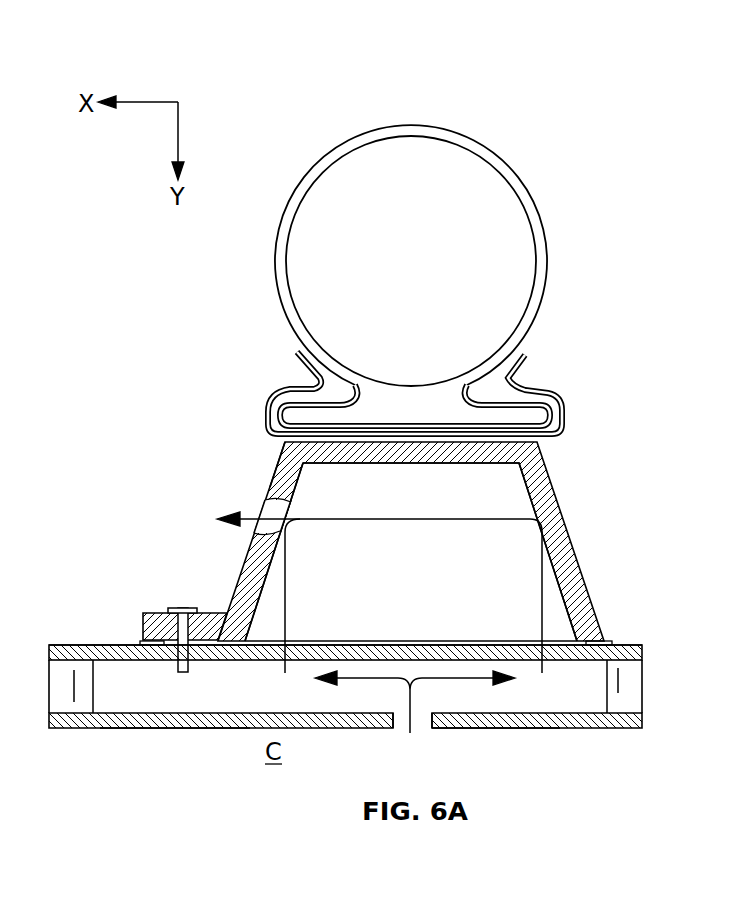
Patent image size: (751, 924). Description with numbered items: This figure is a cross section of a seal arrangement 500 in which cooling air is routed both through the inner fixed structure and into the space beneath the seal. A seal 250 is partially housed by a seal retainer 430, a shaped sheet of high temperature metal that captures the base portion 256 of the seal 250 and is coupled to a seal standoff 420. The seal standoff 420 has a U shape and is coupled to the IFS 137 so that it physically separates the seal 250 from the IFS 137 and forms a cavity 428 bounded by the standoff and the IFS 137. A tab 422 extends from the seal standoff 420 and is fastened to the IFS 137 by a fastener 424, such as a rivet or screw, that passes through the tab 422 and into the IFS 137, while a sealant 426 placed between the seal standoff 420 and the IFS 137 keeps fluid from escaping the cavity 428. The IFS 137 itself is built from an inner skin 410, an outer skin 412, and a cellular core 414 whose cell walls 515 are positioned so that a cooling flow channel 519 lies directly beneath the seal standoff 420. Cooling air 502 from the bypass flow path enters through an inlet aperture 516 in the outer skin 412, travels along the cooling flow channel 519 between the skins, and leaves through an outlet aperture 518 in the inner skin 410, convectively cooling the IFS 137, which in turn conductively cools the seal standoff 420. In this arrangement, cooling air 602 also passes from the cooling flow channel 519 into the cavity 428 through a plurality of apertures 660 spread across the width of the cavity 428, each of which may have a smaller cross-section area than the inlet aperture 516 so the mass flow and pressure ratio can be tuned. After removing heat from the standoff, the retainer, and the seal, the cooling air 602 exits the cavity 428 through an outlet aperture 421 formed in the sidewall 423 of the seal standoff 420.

The seal arrangement 500 is at (525, 120).
The seal 250 is at (373, 135).
The seal retainer 430 is at (543, 393).
The base portion 256 is at (553, 428).
The seal standoff 420 is at (570, 535).
The sidewall 423 is at (278, 480).
The outlet aperture 421 is at (263, 498).
The cavity 428 is at (501, 600).
The tab 422 is at (153, 613).
The fastener 424 is at (182, 608).
The sealant 426 is at (140, 643).
The IFS 137 is at (53, 640).
The inner skin 410 is at (368, 640).
The outer skin 412 is at (640, 720).
The cellular core 414 is at (630, 688).
The cell walls 515 is at (93, 680).
The outlet aperture 518 is at (175, 743).
The inlet aperture 516 is at (398, 724).
The cooling air 502 is at (413, 727).
The plurality of apertures 660 is at (520, 650).
The cooling air 602 is at (290, 543).
The cooling flow channel 519 is at (294, 704).